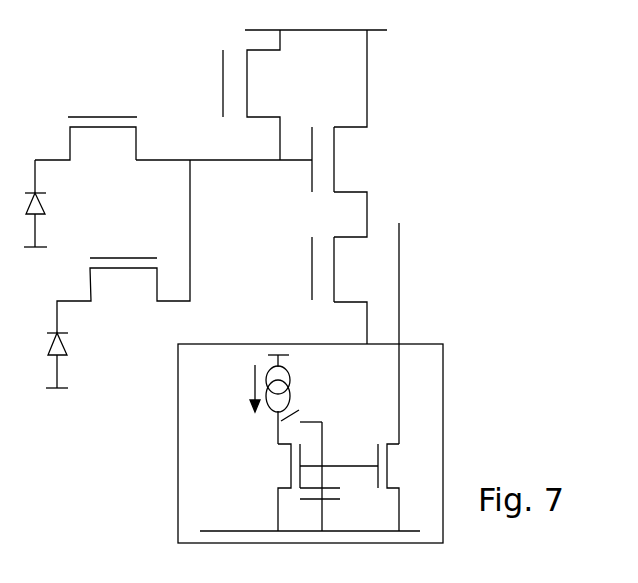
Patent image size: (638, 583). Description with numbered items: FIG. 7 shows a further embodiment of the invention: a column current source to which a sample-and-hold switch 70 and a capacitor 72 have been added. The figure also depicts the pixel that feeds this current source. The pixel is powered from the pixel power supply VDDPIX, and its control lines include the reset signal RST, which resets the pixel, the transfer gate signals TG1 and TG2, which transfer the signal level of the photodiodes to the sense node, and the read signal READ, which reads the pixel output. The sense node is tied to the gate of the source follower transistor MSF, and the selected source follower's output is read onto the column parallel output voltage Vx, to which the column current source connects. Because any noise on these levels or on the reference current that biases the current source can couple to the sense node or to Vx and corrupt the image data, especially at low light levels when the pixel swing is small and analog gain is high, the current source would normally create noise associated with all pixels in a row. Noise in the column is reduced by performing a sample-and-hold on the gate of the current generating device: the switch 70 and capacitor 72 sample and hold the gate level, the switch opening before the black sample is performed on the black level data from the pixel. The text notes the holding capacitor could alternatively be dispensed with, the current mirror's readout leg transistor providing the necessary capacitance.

The S/H hold switch 70 is at (310, 443).
The capacitor 72 is at (340, 499).
The pixel power supply VDDPIX is at (316, 20).
The reset signal RST is at (223, 85).
The transfer gate signal TG1 is at (102, 117).
The transfer gate signal TG2 is at (124, 258).
The source follower transistor MSF is at (344, 133).
The read signal READ is at (312, 268).
The column parallel output voltage Vx is at (411, 333).